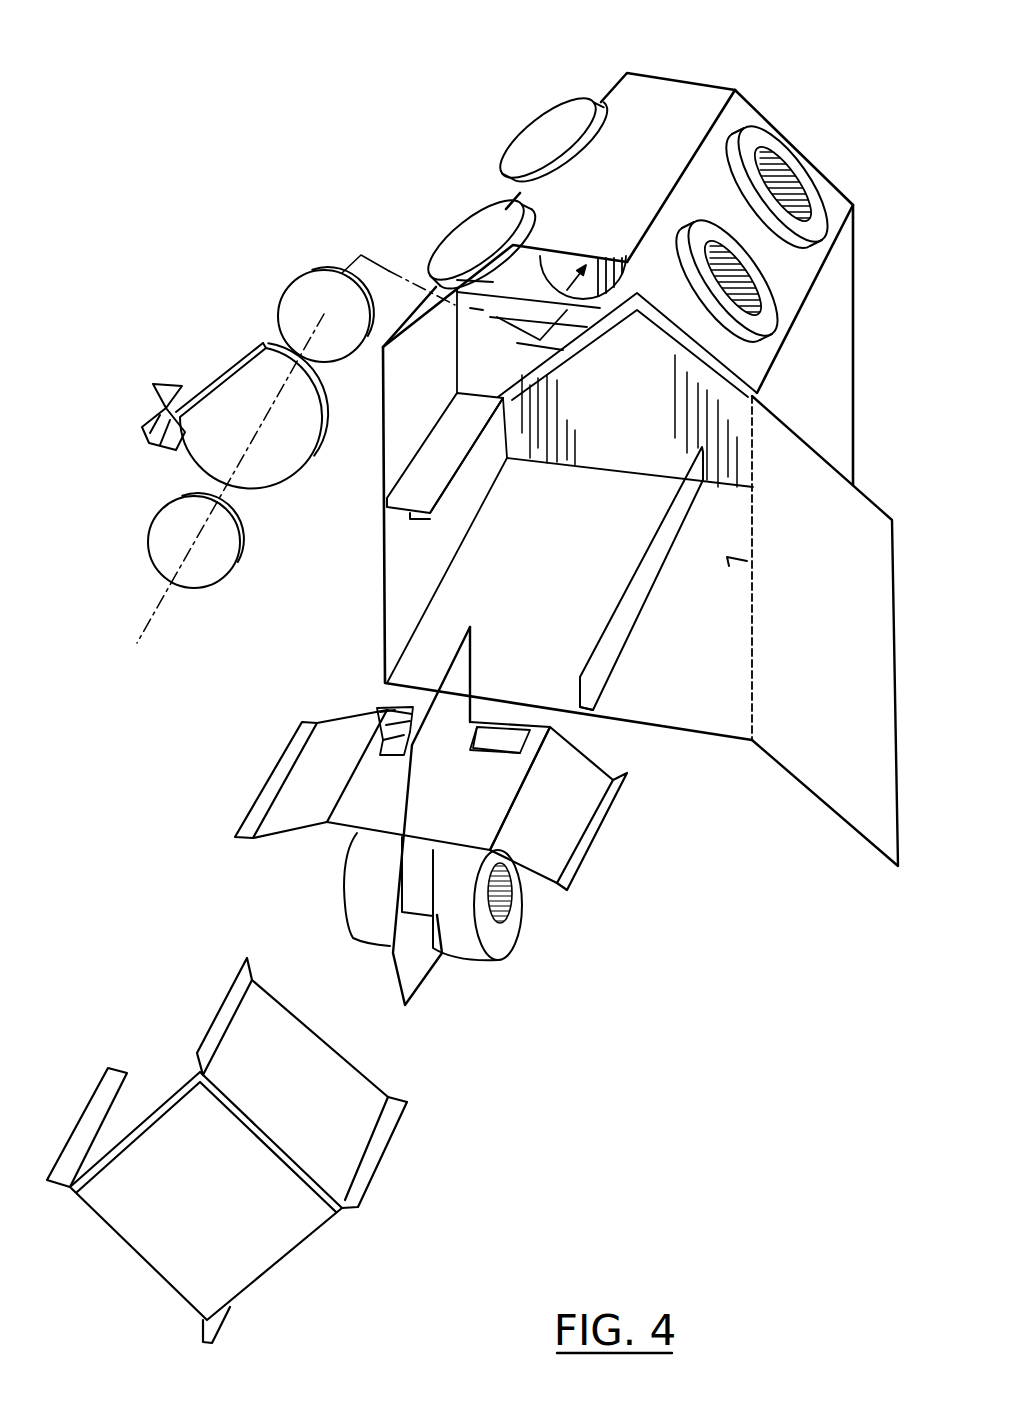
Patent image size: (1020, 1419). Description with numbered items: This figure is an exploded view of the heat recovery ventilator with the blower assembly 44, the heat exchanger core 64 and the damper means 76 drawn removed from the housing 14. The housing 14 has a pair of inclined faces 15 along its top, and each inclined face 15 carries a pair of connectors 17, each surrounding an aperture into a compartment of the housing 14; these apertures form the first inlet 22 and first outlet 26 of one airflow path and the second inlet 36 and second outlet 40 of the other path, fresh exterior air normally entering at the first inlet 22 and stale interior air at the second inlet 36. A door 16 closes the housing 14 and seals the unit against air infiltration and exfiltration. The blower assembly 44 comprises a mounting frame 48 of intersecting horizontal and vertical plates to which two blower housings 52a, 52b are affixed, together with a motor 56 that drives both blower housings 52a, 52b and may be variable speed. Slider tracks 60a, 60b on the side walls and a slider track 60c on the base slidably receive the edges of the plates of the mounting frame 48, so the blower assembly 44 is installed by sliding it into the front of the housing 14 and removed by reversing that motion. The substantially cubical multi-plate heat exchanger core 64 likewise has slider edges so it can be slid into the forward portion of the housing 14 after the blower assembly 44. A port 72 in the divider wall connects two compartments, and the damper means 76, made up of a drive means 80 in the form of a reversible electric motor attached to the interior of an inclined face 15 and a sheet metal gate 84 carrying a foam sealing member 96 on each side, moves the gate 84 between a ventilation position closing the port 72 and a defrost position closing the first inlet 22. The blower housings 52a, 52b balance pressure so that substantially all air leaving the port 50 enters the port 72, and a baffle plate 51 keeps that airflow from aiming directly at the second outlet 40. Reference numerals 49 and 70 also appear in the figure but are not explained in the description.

The housing 14 is at (663, 88).
The inclined face 15 is at (735, 103).
The door 16 is at (856, 505).
The connector 17 is at (815, 198).
The first inlet 22 is at (465, 212).
The first outlet 26 is at (757, 130).
The second inlet 36 is at (763, 295).
The second outlet 40 is at (567, 110).
The blower assembly 44 is at (454, 825).
The mounting frame 48 is at (573, 798).
The opening in tray 49 is at (497, 737).
The port 50 is at (403, 710).
The baffle plate 51 is at (383, 710).
The blower housing 52a is at (350, 903).
The blower housing 52b is at (460, 937).
The motor 56 is at (430, 850).
The slider track 60a is at (423, 518).
The slider track 60b is at (733, 567).
The slider track 60c is at (587, 686).
The heat exchanger core 64 is at (218, 1212).
The interior edge 70 is at (752, 395).
The port 72 is at (563, 267).
The damper means 76 is at (139, 419).
The drive means 80 is at (155, 453).
The gate 84 is at (237, 382).
The foam sealing member 96 is at (327, 276).